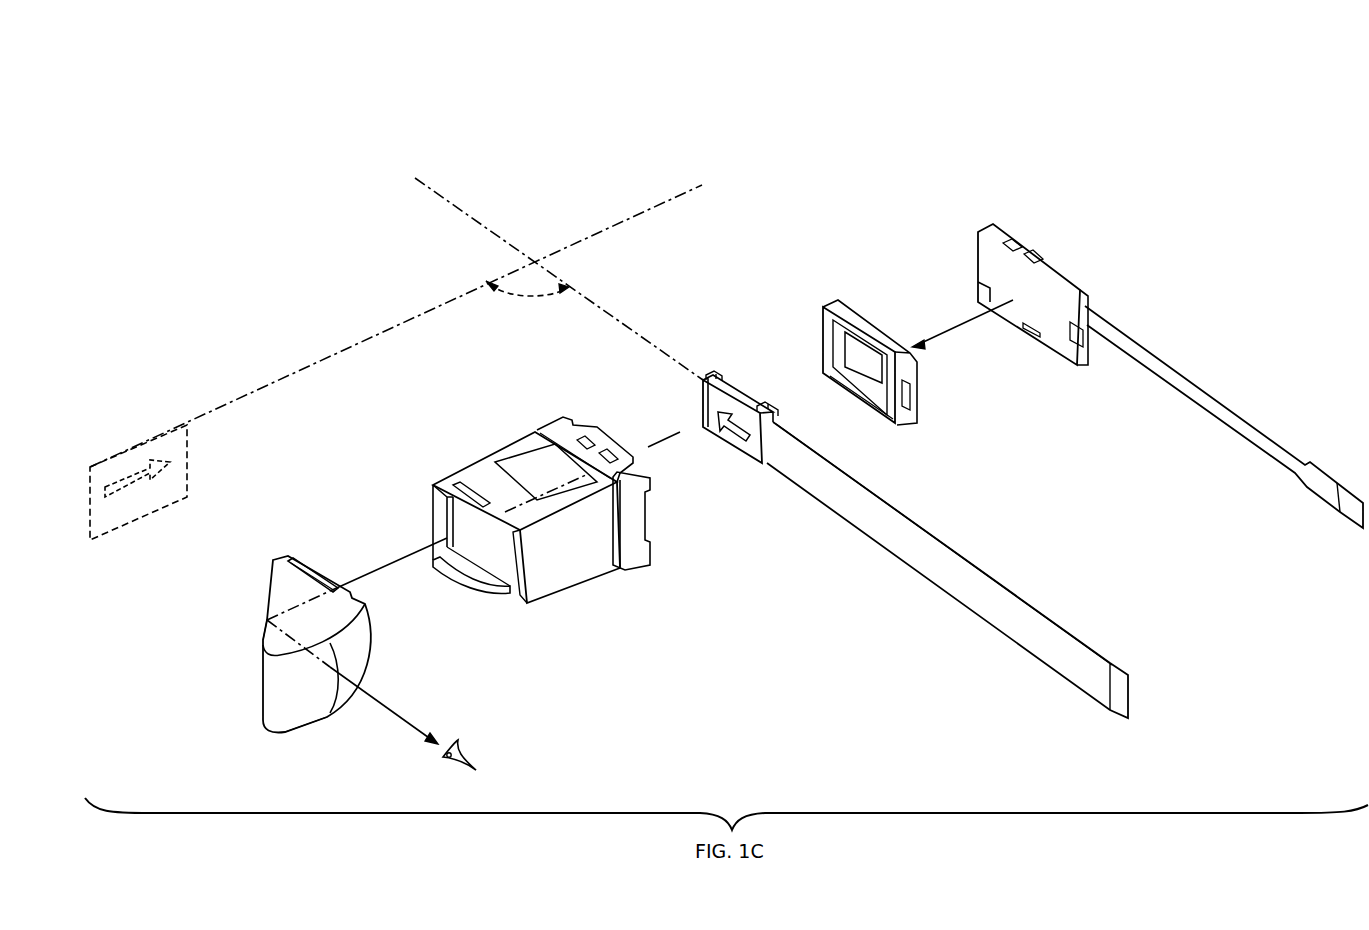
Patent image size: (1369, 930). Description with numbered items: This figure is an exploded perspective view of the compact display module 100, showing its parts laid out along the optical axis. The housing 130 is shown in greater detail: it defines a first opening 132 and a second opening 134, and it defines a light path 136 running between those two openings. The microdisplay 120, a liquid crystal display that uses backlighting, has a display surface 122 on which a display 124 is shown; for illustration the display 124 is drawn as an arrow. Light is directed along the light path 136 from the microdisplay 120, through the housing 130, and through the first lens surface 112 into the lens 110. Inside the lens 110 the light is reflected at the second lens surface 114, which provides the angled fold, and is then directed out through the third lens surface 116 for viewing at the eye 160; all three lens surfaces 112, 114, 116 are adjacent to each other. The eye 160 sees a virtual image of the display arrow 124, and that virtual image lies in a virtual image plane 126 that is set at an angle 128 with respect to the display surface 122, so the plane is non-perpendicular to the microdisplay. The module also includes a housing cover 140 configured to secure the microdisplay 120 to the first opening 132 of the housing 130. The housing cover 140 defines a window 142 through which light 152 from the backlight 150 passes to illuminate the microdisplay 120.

The compact display module 100 is at (918, 156).
The lens 110 is at (251, 584).
The first lens surface 112 is at (298, 562).
The second lens surface 114 is at (267, 653).
The third lens surface 116 is at (293, 720).
The microdisplay 120 is at (732, 392).
The display surface 122 is at (748, 448).
The display 124 is at (721, 425).
The virtual image plane 126 is at (166, 428).
The angle 128 is at (521, 296).
The housing 130 is at (588, 590).
The first opening 132 is at (602, 433).
The second opening 134 is at (513, 577).
The light path 136 is at (428, 540).
The housing cover 140 is at (843, 312).
The window 142 is at (877, 368).
The backlight 150 is at (1077, 288).
The light 152 is at (948, 330).
The eye 160 is at (443, 758).